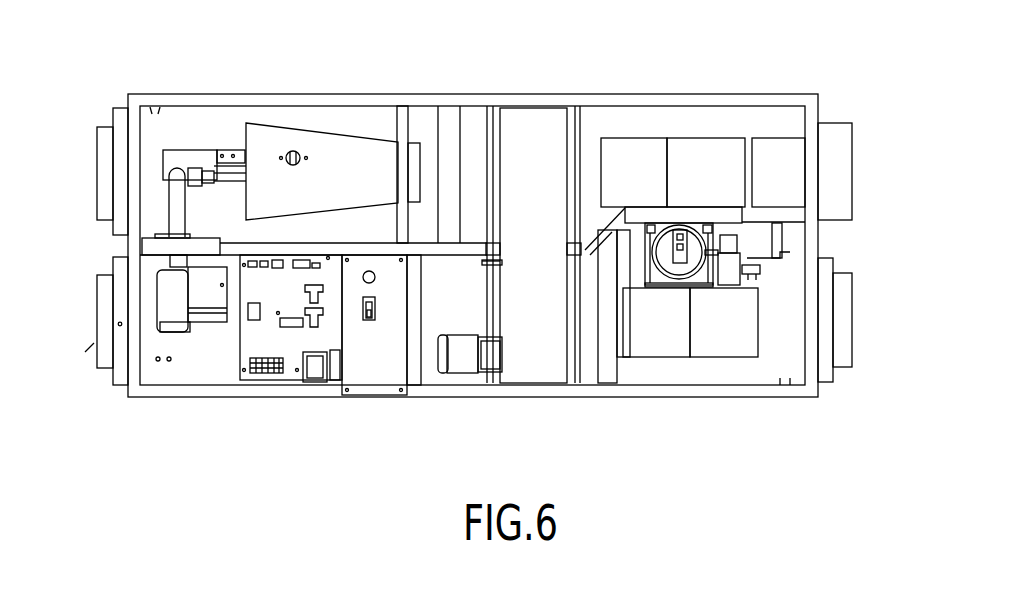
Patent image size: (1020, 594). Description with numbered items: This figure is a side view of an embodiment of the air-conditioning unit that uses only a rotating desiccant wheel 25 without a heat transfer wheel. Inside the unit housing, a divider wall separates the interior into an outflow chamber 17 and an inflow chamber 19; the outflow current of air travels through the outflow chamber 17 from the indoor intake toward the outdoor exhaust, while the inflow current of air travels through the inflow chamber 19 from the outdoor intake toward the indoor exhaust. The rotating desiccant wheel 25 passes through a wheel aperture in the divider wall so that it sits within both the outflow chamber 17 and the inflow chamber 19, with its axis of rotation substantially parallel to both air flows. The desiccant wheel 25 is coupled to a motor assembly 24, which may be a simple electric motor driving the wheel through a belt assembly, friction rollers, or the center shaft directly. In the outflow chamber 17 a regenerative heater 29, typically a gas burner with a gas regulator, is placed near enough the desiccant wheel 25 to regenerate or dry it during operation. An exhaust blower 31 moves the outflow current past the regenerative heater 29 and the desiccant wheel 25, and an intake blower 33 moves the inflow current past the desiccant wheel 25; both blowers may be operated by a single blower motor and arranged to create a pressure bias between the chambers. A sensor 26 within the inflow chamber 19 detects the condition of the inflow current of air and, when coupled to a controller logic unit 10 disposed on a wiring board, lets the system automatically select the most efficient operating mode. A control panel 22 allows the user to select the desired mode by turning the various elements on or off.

The controller logic unit 10 is at (291, 325).
The outflow chamber 17 is at (635, 120).
The inflow chamber 19 is at (767, 363).
The control panel 22 is at (373, 358).
The motor assembly 24 is at (462, 362).
The rotating desiccant wheel 25 is at (535, 132).
The sensor 26 is at (758, 275).
The regenerative heater 29 is at (203, 140).
The exhaust blower 31 is at (710, 152).
The intake blower 33 is at (660, 338).